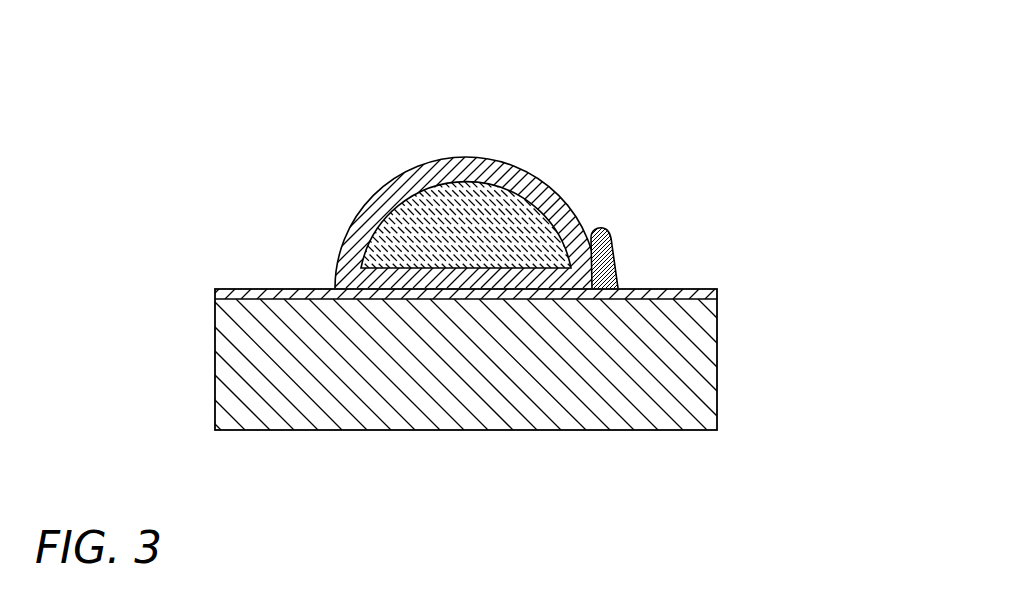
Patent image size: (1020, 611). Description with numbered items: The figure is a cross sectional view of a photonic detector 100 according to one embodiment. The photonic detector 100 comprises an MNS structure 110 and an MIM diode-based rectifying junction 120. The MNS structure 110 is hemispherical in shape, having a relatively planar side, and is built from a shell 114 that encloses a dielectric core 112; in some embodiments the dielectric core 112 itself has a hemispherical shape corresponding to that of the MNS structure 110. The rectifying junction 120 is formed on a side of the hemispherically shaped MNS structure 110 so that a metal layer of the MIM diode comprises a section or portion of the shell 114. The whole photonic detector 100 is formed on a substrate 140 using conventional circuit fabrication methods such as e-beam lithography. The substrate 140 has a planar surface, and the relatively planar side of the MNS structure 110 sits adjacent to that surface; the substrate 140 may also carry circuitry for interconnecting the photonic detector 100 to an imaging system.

The photonic detector 100 is at (690, 72).
The MNS structure 110 is at (325, 62).
The dielectric core 112 is at (408, 208).
The shell 114 is at (460, 165).
The MIM diode-based rectifying junction 120 is at (610, 207).
The substrate 140 is at (728, 289).